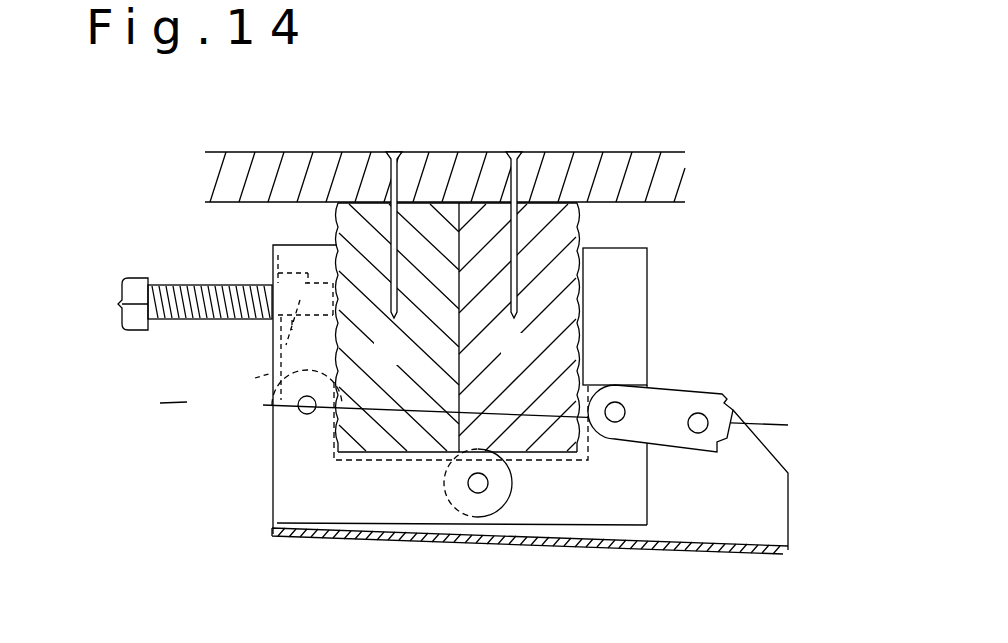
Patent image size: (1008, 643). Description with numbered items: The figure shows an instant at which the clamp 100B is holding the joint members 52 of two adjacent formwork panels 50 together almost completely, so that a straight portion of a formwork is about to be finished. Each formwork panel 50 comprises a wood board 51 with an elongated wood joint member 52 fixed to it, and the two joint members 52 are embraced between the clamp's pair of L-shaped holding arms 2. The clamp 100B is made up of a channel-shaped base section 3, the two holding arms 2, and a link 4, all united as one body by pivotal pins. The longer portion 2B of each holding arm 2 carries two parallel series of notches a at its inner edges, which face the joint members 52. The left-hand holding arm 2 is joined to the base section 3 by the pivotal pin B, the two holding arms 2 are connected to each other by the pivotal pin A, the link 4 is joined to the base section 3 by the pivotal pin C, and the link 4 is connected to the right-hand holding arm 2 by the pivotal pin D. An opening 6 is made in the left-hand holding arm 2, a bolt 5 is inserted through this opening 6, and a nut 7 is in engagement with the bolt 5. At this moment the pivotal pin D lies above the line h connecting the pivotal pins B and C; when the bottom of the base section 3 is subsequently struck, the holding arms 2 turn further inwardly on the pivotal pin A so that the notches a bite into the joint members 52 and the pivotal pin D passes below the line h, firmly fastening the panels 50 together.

The formwork panel 50 is at (513, 124).
The wood board 51 is at (208, 176).
The joint member 52 is at (330, 220).
The longer portion 2B is at (272, 273).
The bolt 5 is at (167, 322).
The opening 6 is at (263, 308).
The nut 7 is at (258, 378).
The line h— h is at (489, 421).
The pivotal pin B is at (297, 413).
The clamp 100B is at (184, 464).
The notches a is at (345, 342).
The link 4 is at (728, 404).
The pivotal pin D is at (615, 422).
The pivotal pin C is at (698, 433).
The base section 3 is at (797, 495).
The L-shaped holding arm 2 is at (365, 520).
The pivotal pin A is at (478, 493).